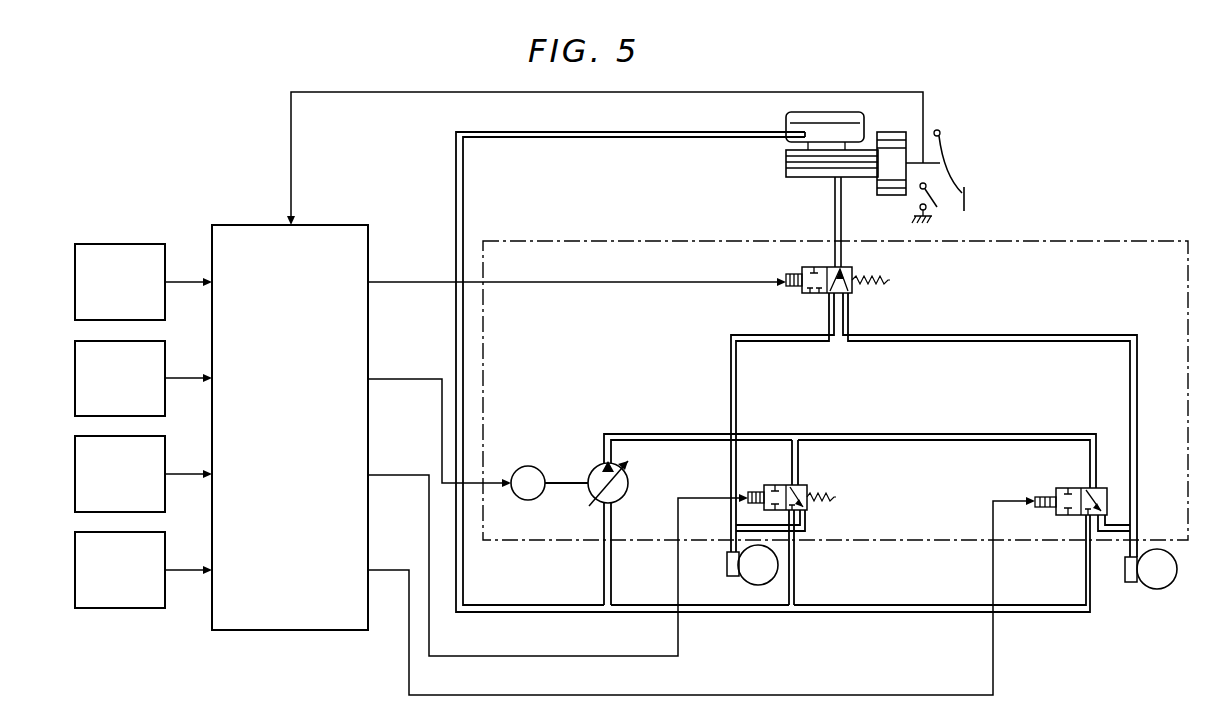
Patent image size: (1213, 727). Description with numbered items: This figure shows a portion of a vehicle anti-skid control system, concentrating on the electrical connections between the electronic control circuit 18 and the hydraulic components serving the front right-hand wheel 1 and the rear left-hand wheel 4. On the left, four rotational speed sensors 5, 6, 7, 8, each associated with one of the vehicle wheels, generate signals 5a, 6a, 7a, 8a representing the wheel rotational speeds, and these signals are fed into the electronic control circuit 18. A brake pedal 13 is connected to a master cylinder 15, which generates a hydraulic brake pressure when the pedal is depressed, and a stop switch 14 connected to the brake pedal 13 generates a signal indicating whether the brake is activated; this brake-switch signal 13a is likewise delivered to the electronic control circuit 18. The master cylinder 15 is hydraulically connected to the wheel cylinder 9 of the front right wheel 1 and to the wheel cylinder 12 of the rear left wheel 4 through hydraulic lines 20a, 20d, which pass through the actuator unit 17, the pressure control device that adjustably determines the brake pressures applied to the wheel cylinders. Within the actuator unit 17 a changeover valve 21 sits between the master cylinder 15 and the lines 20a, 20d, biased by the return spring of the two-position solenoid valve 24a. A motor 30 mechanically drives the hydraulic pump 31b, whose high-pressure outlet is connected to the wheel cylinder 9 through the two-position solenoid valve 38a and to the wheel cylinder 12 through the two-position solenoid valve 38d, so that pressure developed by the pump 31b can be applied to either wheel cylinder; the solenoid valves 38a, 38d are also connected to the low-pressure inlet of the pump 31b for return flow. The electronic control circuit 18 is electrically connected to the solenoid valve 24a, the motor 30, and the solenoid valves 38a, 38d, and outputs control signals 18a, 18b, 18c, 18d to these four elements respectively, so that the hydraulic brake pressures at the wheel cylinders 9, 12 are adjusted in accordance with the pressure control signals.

The front right-hand wheel 1 is at (743, 583).
The rear left-hand wheel 4 is at (1157, 584).
The rotational speed sensor 5 is at (75, 256).
The rotational speed sensor 6 is at (75, 354).
The rotational speed sensor 7 is at (75, 449).
The rotational speed sensor 8 is at (75, 545).
The wheel speed signal 5a is at (183, 281).
The wheel speed signal 6a is at (183, 378).
The wheel speed signal 7a is at (183, 473).
The wheel speed signal 8a is at (183, 569).
The wheel cylinder 9 is at (727, 567).
The wheel cylinder 12 is at (1130, 583).
The brake pedal 13 is at (966, 200).
The brake switch signal line 13a is at (292, 186).
The stop switch 14 is at (938, 202).
The master cylinder 15 is at (803, 180).
The actuator unit 17 is at (1101, 241).
The electronic control circuit 18 is at (252, 225).
The control signal 18a is at (406, 282).
The control signal 18b is at (406, 378).
The control signal 18c is at (403, 474).
The control signal 18d is at (392, 569).
The hydraulic line 20a is at (731, 362).
The hydraulic line 20d is at (1130, 385).
The changeover valve 21 is at (842, 254).
The two-position solenoid valve 24a is at (890, 280).
The motor 30 is at (529, 466).
The hydraulic pump 31b is at (629, 480).
The two-position solenoid valve 38a is at (834, 498).
The two-position solenoid valve 38d is at (1064, 488).